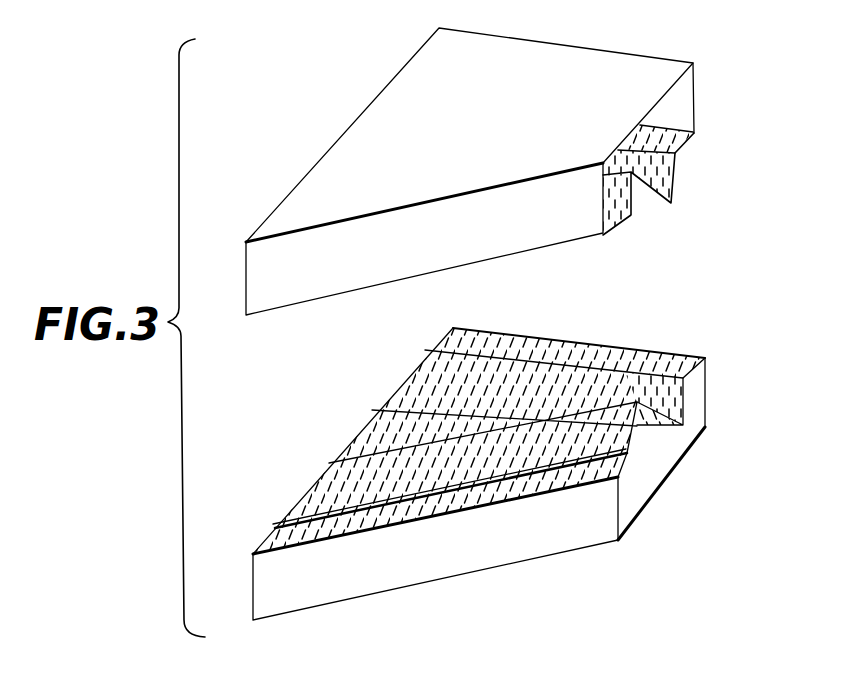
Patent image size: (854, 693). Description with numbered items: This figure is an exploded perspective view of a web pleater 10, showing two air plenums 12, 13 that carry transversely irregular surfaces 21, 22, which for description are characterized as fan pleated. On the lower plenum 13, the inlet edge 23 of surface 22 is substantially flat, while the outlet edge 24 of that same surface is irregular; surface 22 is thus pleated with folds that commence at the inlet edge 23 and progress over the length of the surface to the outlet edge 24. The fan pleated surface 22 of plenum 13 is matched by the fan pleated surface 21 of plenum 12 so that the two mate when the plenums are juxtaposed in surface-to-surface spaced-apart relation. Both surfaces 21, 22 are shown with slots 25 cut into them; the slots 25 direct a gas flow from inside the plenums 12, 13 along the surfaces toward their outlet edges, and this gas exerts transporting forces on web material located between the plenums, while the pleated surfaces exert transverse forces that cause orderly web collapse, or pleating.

The web pleater 10 is at (697, 297).
The air plenum 12 is at (490, 278).
The air plenum 13 is at (503, 466).
The transversely irregular surface 21 is at (676, 135).
The transversely irregular surface 22 is at (653, 357).
The inlet edge 23 is at (288, 509).
The outlet edge 24 is at (686, 399).
The slots 25 is at (645, 190).